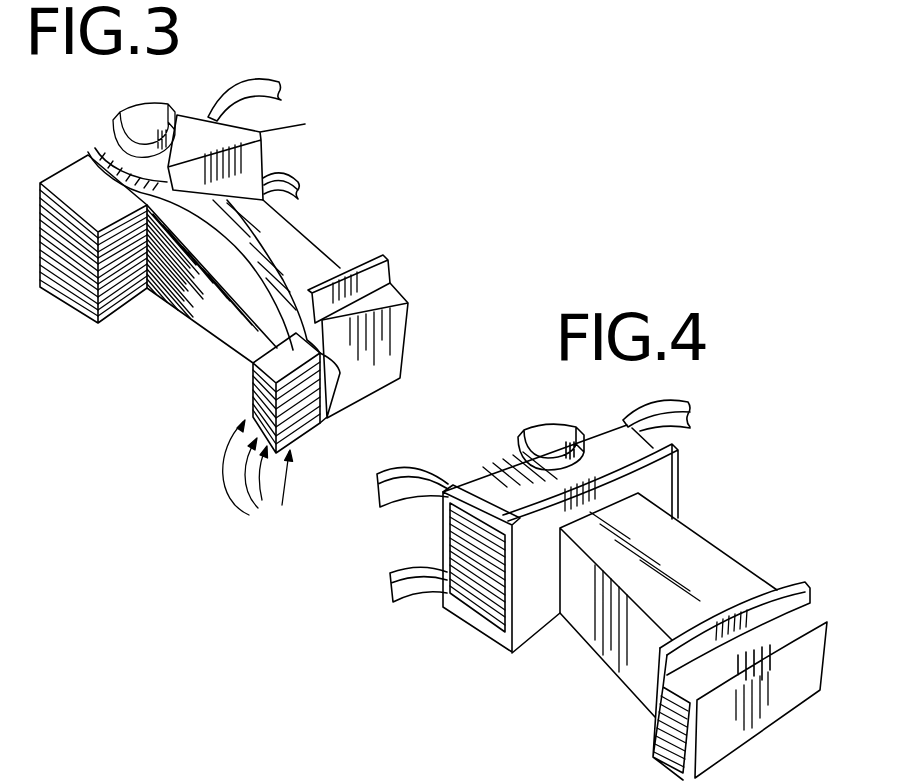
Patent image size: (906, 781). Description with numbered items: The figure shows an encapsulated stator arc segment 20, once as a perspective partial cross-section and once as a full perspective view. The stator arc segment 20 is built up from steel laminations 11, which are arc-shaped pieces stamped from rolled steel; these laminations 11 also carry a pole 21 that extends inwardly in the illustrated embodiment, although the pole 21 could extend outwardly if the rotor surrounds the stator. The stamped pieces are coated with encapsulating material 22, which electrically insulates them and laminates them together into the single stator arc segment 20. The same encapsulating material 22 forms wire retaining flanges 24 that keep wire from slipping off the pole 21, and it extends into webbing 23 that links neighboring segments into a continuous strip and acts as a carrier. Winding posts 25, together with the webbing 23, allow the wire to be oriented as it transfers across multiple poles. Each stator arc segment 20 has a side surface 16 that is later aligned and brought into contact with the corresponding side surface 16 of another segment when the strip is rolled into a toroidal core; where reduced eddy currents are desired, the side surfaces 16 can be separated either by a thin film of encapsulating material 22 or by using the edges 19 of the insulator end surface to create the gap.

In FIG. 3, the steel laminations 11 is at (258, 473).
In FIG. 3, the side surface 16 is at (65, 237).
In FIG. 4, the side surface 16 is at (480, 583).
In FIG. 4, the edges of the insulator end surface 19 is at (468, 508).
In FIG. 3, the stator arc segment 20 is at (148, 350).
In FIG. 4, the stator arc segment 20 is at (553, 647).
In FIG. 3, the pole 21 is at (305, 360).
In FIG. 4, the pole 21 is at (773, 635).
In FIG. 3, the encapsulating material 22 is at (292, 285).
In FIG. 4, the encapsulating material 22 is at (693, 570).
In FIG. 3, the webbing 23 is at (255, 78).
In FIG. 4, the webbing 23 is at (386, 466).
In FIG. 3, the wire retaining flanges 24 is at (258, 141).
In FIG. 4, the wire retaining flanges 24 is at (673, 472).
In FIG. 4, the winding posts 25 is at (572, 426).